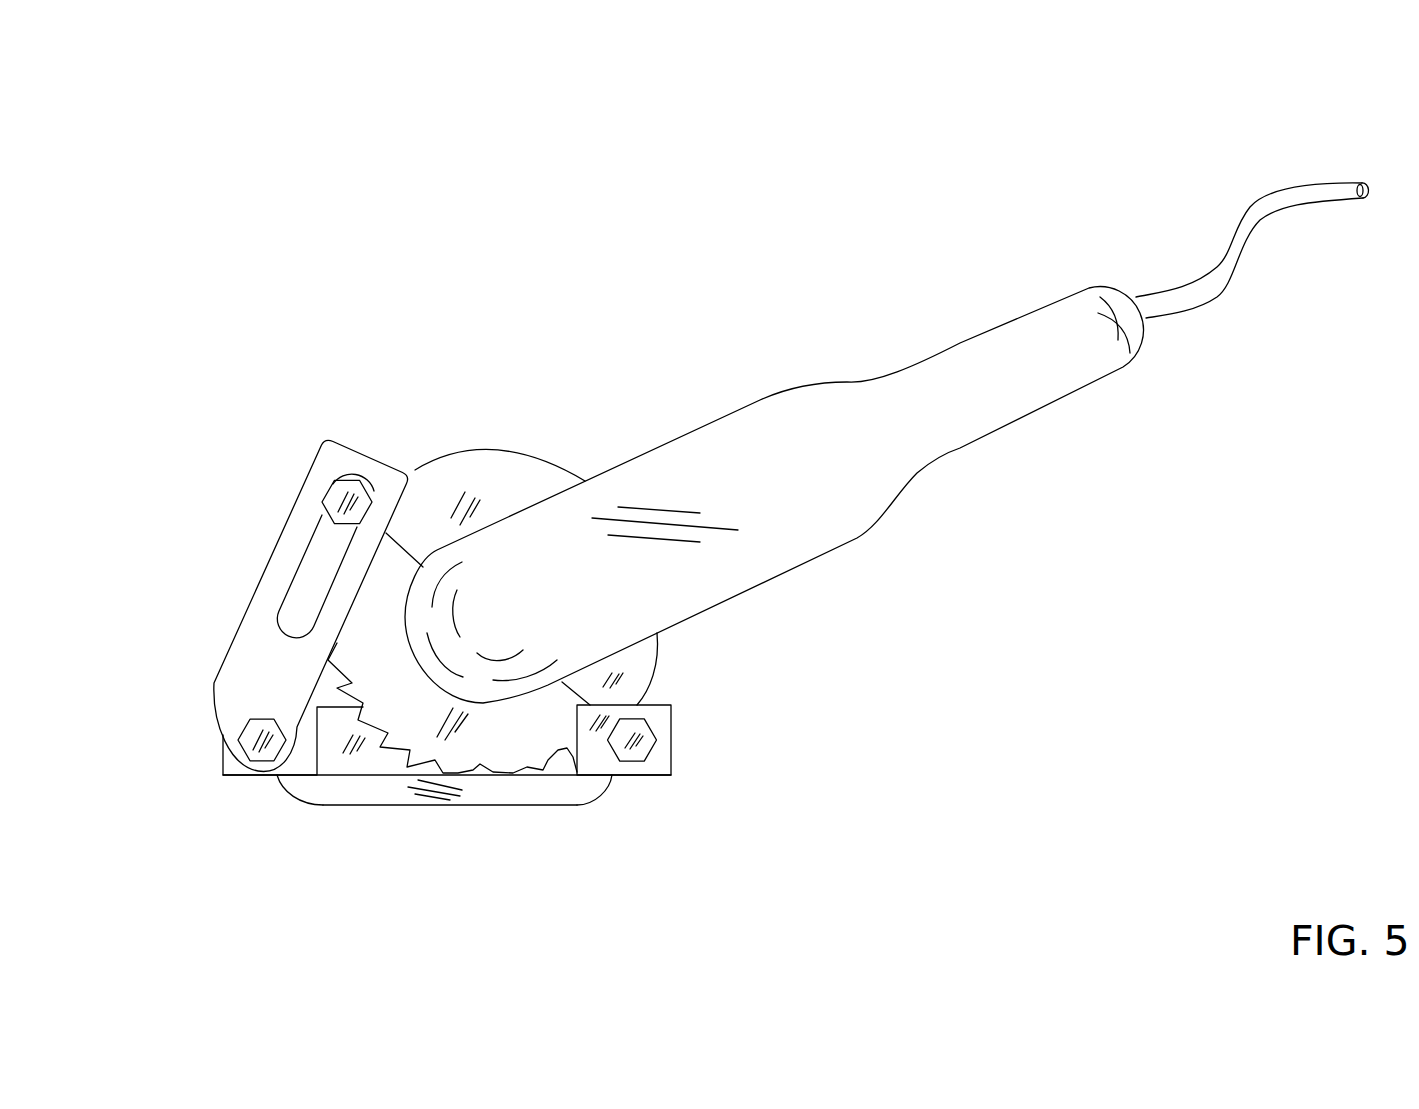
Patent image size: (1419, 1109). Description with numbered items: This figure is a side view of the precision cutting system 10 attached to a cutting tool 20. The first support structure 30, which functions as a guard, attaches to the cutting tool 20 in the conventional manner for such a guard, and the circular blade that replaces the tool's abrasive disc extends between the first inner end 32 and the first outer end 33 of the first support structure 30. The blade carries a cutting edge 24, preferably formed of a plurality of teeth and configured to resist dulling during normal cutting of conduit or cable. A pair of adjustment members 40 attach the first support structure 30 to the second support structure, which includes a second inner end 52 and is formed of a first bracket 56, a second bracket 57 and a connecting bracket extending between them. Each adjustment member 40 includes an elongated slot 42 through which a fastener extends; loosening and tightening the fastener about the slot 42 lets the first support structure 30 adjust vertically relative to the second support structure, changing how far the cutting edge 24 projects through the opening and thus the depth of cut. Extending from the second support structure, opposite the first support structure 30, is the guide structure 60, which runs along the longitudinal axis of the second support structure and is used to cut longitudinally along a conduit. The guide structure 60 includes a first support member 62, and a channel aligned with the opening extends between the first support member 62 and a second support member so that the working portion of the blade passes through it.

The precision cutting system 10 is at (285, 170).
The cutting tool 20 is at (493, 750).
The cutting edge 24 is at (400, 750).
The first support structure 30 is at (512, 450).
The first inner end 32 is at (647, 688).
The first outer end 33 is at (415, 469).
The adjustment member 40 is at (267, 572).
The slot 42 is at (297, 568).
The second inner end 52 is at (663, 748).
The first bracket 56 is at (603, 765).
The second bracket 57 is at (223, 763).
The guide structure 60 is at (293, 802).
The first support member 62 is at (360, 798).